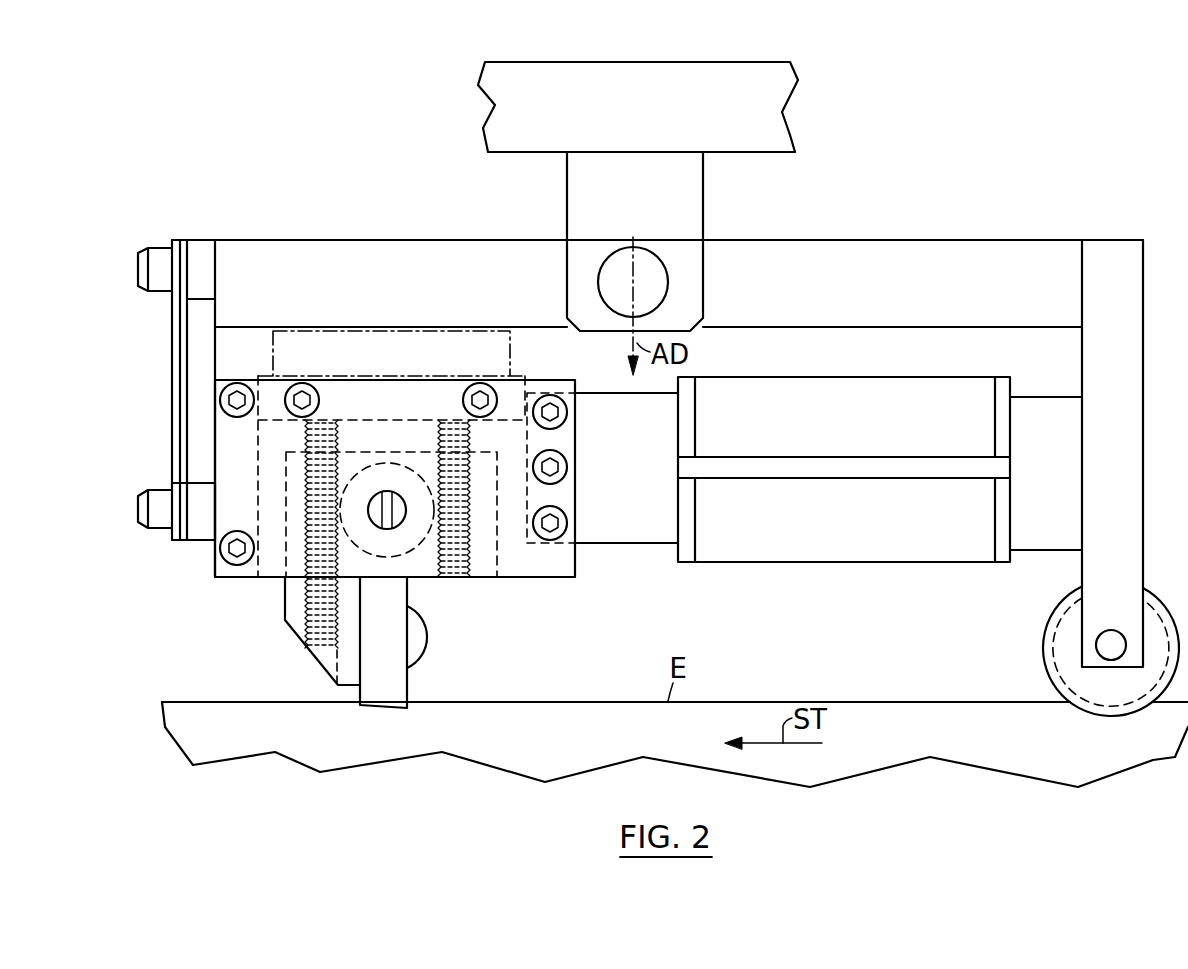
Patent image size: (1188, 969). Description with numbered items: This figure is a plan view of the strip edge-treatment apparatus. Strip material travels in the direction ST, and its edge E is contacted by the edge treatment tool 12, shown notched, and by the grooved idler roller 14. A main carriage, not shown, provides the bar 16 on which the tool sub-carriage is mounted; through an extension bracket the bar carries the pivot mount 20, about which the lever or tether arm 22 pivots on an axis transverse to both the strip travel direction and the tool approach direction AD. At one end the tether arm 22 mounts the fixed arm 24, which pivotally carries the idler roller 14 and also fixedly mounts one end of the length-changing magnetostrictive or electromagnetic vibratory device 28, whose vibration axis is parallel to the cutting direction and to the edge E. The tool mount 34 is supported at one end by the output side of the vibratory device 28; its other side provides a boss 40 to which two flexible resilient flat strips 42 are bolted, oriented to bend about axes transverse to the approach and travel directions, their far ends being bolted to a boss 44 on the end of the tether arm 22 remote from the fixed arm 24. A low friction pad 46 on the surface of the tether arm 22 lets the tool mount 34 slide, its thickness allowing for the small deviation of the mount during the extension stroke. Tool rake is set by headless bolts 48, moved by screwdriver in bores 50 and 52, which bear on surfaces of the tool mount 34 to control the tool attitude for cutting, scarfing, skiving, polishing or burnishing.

The edge treatment tool 12 is at (395, 688).
The idler roller 14 is at (1044, 629).
The bar 16 is at (640, 123).
The pivot mount 20 is at (652, 257).
The tether arm 22 is at (896, 304).
The fixed arm 24 is at (1100, 246).
The vibratory device 28 is at (843, 564).
The tool mount 34 is at (537, 585).
The boss 40 is at (195, 532).
The flexible resilient flat strips 42 is at (176, 376).
The boss 44 is at (203, 250).
The low friction pad 46 is at (400, 366).
The headless bolts 48 is at (464, 440).
The bore 50 is at (448, 577).
The bore 52 is at (300, 545).